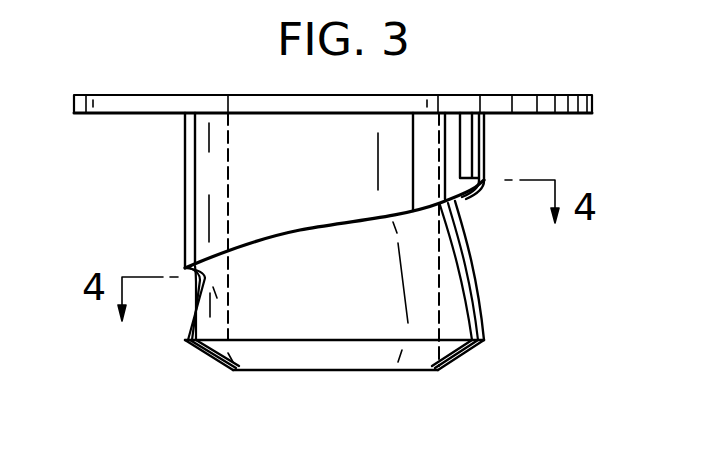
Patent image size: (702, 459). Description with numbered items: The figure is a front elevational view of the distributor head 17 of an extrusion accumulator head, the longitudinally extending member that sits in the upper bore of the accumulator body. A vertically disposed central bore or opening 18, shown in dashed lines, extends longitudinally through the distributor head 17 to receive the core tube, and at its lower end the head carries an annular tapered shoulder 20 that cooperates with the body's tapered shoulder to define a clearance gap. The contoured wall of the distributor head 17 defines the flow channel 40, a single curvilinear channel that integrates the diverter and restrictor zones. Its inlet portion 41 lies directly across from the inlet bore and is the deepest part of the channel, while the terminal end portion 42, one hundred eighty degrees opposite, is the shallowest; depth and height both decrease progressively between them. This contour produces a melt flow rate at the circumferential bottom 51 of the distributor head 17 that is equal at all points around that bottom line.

The distributor head 17 is at (176, 190).
The central bore 18 is at (228, 308).
The annular tapered shoulder 20 is at (207, 358).
The flow channel 40 is at (480, 238).
The inlet portion 41 is at (455, 200).
The terminal end portion 42 is at (200, 277).
The circumferential bottom 51 is at (365, 340).